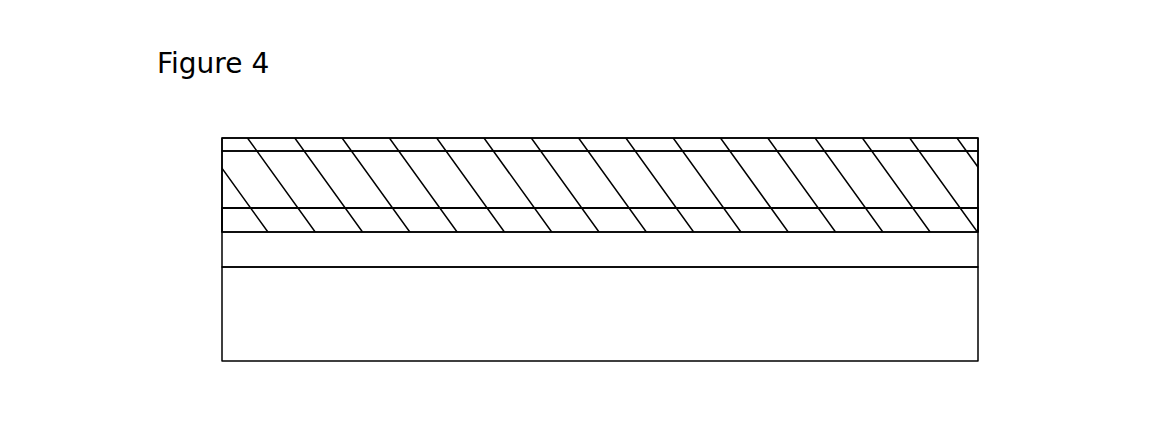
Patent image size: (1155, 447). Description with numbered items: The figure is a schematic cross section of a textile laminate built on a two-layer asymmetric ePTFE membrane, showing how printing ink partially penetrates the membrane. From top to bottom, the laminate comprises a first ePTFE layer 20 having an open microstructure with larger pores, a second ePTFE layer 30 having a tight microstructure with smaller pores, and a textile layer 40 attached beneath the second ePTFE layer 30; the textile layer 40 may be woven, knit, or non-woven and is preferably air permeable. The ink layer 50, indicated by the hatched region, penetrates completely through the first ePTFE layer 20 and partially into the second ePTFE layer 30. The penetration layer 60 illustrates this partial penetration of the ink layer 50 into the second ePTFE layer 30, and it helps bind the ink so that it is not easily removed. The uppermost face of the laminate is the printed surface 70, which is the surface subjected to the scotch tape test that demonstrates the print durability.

The first ePTFE layer 20 is at (978, 151).
The second ePTFE layer 30 is at (978, 208).
The textile layer 40 is at (978, 267).
The ink layer 50 is at (222, 138).
The penetration layer 60 is at (247, 220).
The printed surface 70 is at (933, 138).